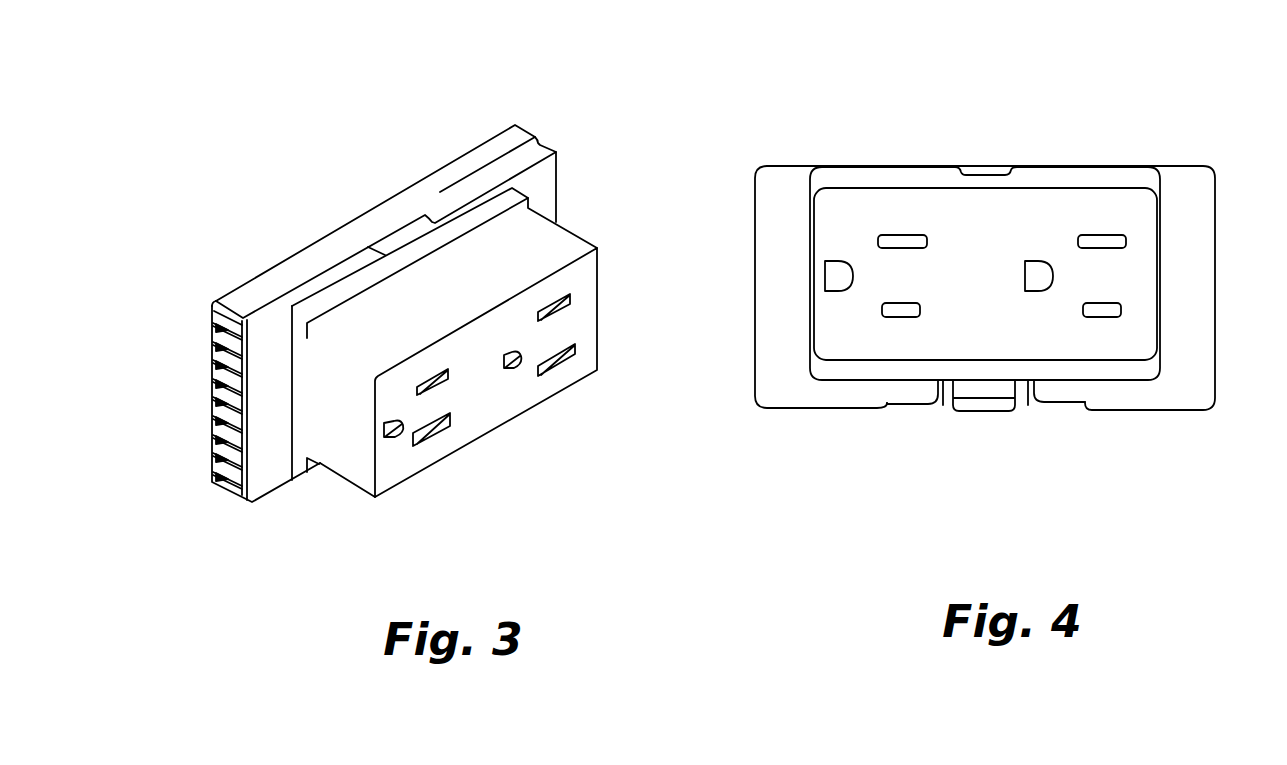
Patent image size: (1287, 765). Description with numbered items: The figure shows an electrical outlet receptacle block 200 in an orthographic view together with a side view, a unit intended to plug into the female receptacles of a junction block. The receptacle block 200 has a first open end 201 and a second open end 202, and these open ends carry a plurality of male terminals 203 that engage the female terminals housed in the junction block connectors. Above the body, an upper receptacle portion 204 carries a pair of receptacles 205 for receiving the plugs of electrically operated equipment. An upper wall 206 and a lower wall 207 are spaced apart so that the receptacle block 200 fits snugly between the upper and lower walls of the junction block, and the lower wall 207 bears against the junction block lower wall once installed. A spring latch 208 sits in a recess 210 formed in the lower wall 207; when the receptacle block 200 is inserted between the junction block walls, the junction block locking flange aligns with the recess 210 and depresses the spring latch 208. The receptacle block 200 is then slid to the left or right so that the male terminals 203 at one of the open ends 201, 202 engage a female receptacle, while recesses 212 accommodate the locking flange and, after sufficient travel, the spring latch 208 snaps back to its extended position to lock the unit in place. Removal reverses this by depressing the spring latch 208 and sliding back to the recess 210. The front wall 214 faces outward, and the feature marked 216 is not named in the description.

In FIG. 3, the electrical outlet receptacle block 200 is at (302, 186).
In FIG. 4, the electrical outlet receptacle block 200 is at (1064, 163).
In FIG. 3, the first open end 201 is at (212, 322).
In FIG. 4, the first open end 201 is at (756, 320).
In FIG. 3, the second open end 202 is at (533, 137).
In FIG. 4, the second open end 202 is at (1220, 307).
In FIG. 3, the male terminals 203 is at (212, 378).
In FIG. 3, the upper receptacle portion 204 is at (582, 244).
In FIG. 3, the receptacles 205 is at (460, 418).
In FIG. 4, the receptacles 205 is at (975, 276).
In FIG. 3, the upper wall 206 is at (440, 178).
In FIG. 4, the upper wall 206 is at (892, 170).
In FIG. 3, the lower wall 207 is at (276, 494).
In FIG. 4, the lower wall 207 is at (848, 410).
In FIG. 4, the spring latch 208 is at (986, 414).
In FIG. 4, the recess 210 is at (946, 412).
In FIG. 4, the recesses 212 is at (912, 410).
In FIG. 3, the front wall 214 is at (262, 468).
In FIG. 4, the front wall 214 is at (773, 393).
In FIG. 3, the notch 216 is at (312, 472).